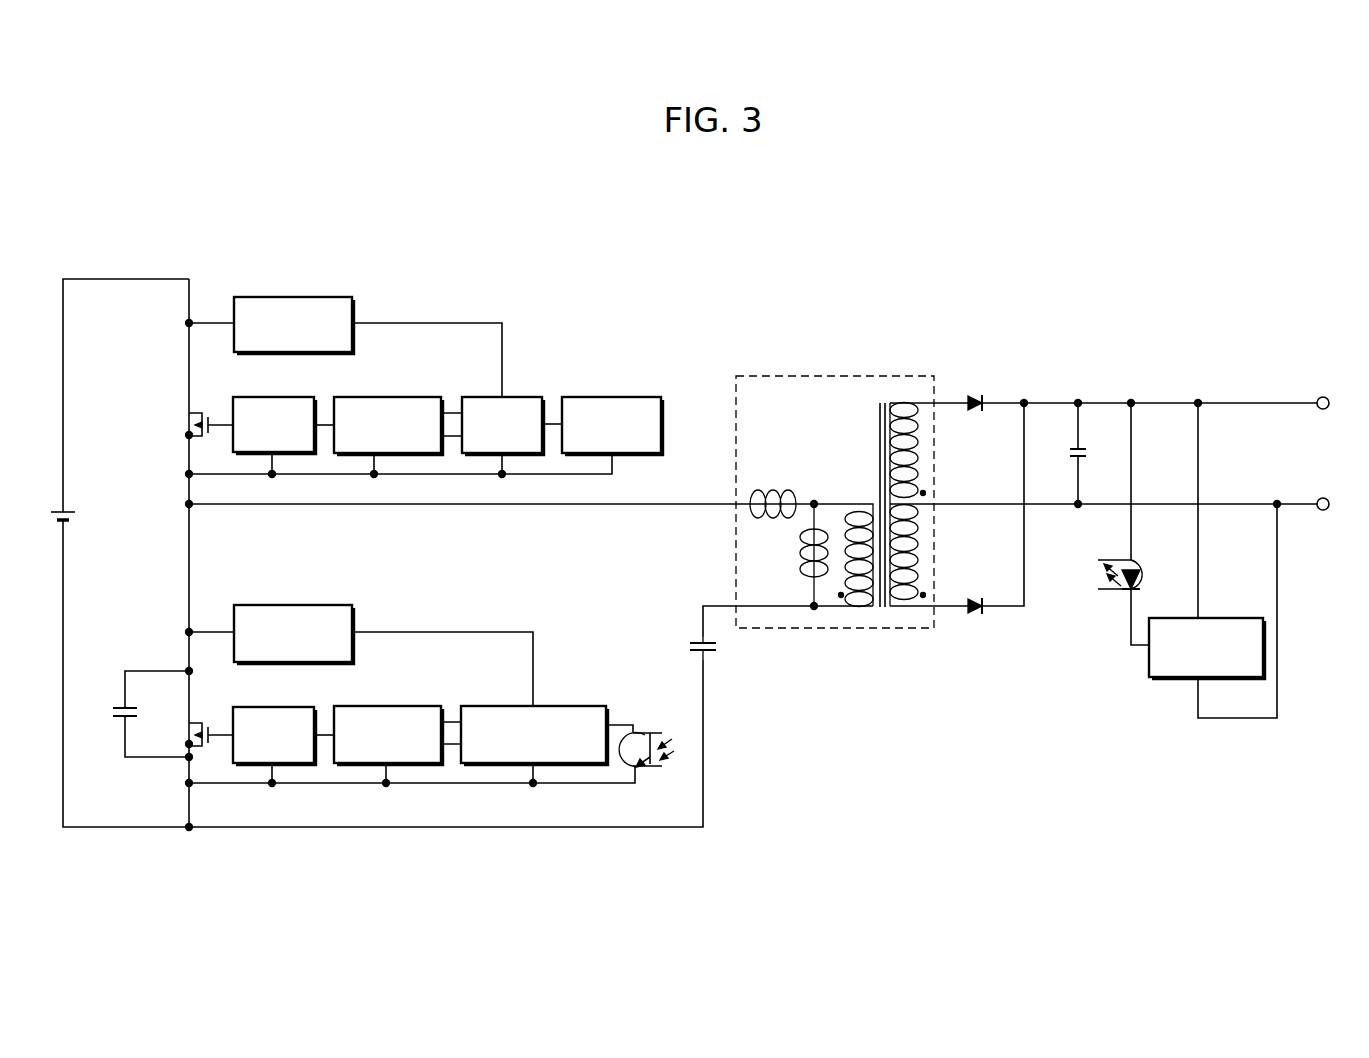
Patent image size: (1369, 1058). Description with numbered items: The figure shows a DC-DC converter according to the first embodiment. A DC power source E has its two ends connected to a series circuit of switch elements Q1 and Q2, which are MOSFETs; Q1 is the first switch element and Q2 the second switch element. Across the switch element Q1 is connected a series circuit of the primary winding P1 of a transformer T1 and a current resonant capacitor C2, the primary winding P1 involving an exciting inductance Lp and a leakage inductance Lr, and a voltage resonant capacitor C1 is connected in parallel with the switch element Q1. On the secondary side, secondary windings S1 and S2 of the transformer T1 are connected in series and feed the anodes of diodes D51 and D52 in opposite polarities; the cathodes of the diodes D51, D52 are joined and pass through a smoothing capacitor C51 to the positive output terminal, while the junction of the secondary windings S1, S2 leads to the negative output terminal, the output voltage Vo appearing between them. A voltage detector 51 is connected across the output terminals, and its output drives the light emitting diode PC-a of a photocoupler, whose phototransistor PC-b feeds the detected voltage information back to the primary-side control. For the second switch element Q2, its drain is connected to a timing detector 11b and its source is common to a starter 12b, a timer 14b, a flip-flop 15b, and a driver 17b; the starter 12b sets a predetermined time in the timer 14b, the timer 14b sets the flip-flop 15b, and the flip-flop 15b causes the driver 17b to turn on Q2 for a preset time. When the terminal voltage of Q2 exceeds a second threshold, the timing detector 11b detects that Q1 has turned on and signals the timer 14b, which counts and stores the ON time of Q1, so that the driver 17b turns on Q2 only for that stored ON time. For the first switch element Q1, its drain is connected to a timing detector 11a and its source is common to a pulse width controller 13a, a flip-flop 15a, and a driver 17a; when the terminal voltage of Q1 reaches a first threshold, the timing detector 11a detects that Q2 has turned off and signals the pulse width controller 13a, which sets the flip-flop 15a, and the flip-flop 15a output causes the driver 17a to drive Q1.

The timing detector 11b is at (288, 297).
The driver 17b is at (268, 397).
The flip-flop 15b is at (378, 397).
The timer 14b is at (516, 397).
The starter 12b is at (604, 397).
The timing detector 11a is at (288, 605).
The driver 17a is at (268, 707).
The flip-flop 15a is at (385, 706).
The pulse width controller 13a is at (578, 706).
The voltage detector 51 is at (1223, 618).
The switch element Q1 is at (210, 717).
The switch element Q2 is at (194, 426).
The voltage resonant capacitor C1 is at (153, 714).
The current resonant capacitor C2 is at (719, 647).
The smoothing capacitor C51 is at (1102, 453).
The DC power source E is at (70, 515).
The leakage inductance Lr is at (782, 490).
The exciting inductance Lp is at (799, 555).
The primary winding P1 is at (723, 552).
The transformer T1 is at (889, 492).
The secondary winding S1 is at (927, 450).
The secondary winding S2 is at (927, 552).
The diode D51 is at (977, 392).
The diode D52 is at (977, 593).
The light emitting diode PC-a is at (1109, 595).
The phototransistor PC-b is at (651, 732).
The output voltage Vo is at (1324, 453).